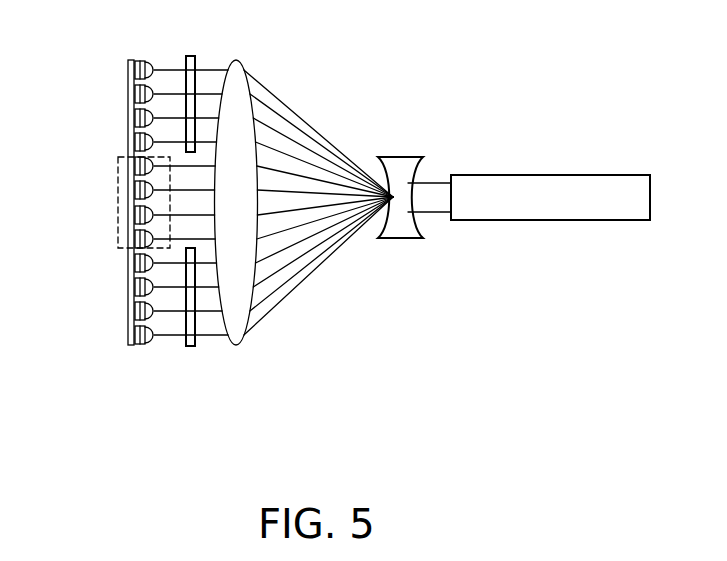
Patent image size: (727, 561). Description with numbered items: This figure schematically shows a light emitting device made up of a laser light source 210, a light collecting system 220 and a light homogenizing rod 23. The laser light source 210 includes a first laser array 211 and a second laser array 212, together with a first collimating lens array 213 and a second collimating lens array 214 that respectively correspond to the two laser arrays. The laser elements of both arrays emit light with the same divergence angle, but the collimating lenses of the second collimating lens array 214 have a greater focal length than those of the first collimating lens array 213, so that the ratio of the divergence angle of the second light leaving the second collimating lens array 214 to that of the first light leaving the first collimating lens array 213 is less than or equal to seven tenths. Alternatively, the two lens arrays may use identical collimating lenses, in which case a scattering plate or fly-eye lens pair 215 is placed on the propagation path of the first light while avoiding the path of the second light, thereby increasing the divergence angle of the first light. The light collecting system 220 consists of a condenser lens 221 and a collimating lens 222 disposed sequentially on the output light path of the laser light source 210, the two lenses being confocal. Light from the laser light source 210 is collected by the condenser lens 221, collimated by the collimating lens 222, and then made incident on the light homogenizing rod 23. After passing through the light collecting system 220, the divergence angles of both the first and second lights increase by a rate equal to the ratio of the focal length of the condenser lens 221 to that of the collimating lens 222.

The laser light source 210 is at (129, 353).
The first laser array 211 is at (130, 122).
The second laser array 212 is at (132, 219).
The first collimating lens array 213 is at (151, 63).
The second collimating lens array 214 is at (122, 177).
The scattering plate or fly-eye lens pair 215 is at (195, 60).
The light collecting system 220 is at (326, 209).
The condenser lens 221 is at (245, 346).
The collimating lens 222 is at (400, 225).
The light homogenizing rod 23 is at (498, 212).